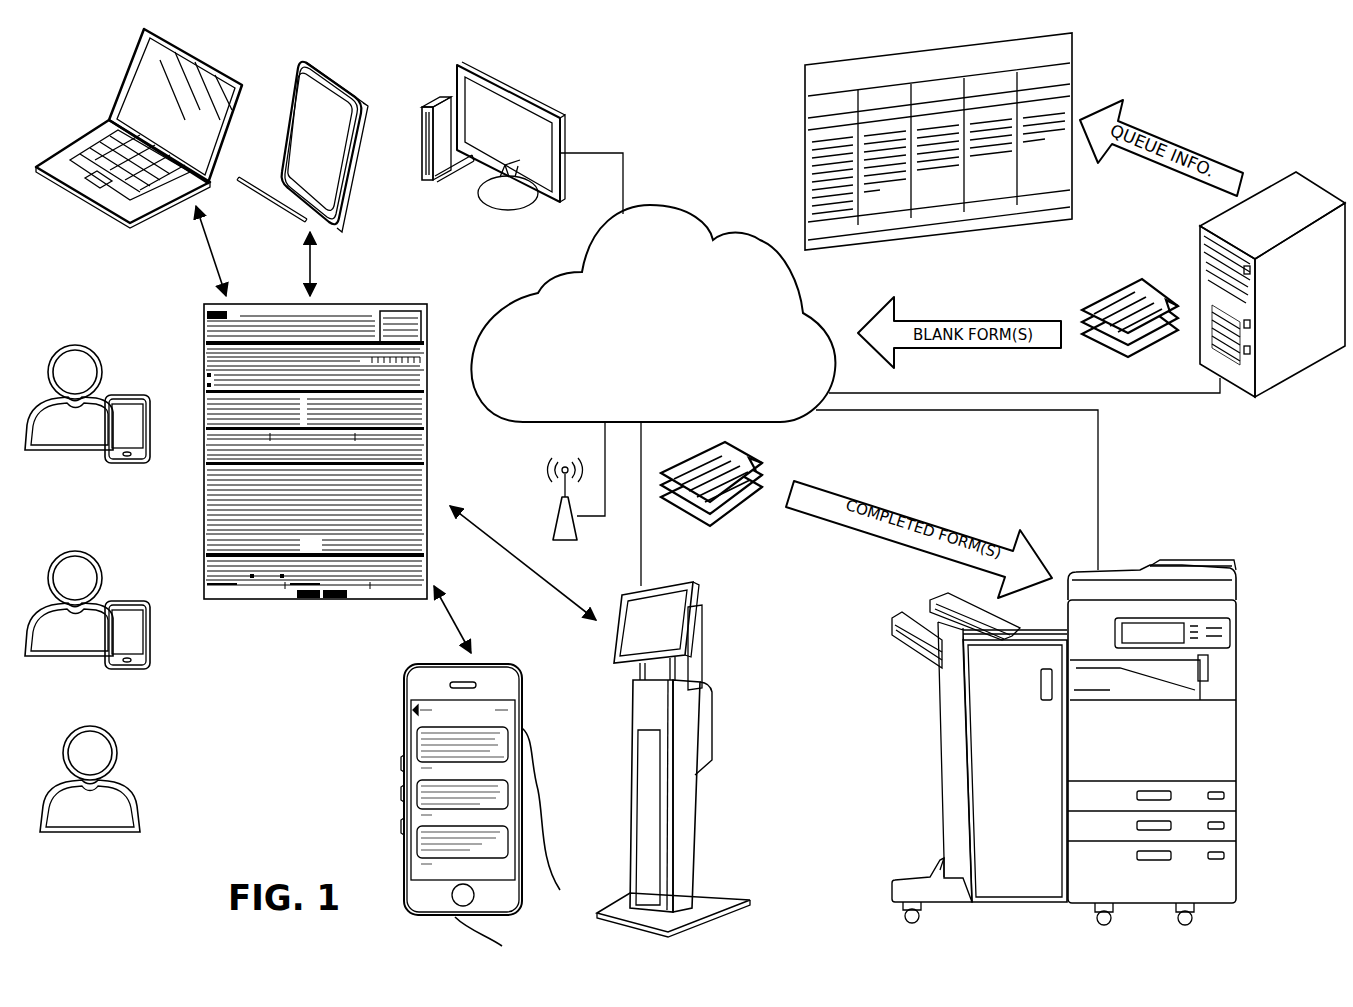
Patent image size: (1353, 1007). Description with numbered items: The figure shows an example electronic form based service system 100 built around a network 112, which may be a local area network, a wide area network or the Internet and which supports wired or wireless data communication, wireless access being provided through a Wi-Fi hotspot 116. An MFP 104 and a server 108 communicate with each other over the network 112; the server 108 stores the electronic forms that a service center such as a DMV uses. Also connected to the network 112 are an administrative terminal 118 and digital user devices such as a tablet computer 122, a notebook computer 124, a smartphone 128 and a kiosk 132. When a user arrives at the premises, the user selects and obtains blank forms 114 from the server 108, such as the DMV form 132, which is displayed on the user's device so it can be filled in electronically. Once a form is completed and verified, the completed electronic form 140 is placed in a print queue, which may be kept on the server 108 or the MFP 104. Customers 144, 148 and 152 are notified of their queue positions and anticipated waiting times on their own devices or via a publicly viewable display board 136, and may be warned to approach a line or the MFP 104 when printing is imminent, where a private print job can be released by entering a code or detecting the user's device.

The electronic form based service system 100 is at (1212, 84).
The MFP 104 is at (1238, 722).
The server 108 is at (1289, 377).
The network 112 is at (672, 212).
The blank forms 114 is at (1152, 288).
The Wi-Fi hotspot 116 is at (557, 514).
The administrative terminal 118 is at (540, 103).
The tablet computer 122 is at (348, 185).
The notebook computer 124 is at (100, 205).
The smartphone 128 is at (508, 663).
The kiosk / DMV form 132 is at (275, 603).
The display board 136 is at (1075, 178).
The completed electronic form 140 is at (735, 516).
The customer 144 is at (135, 392).
The customer 148 is at (150, 638).
The customer 152 is at (140, 802).